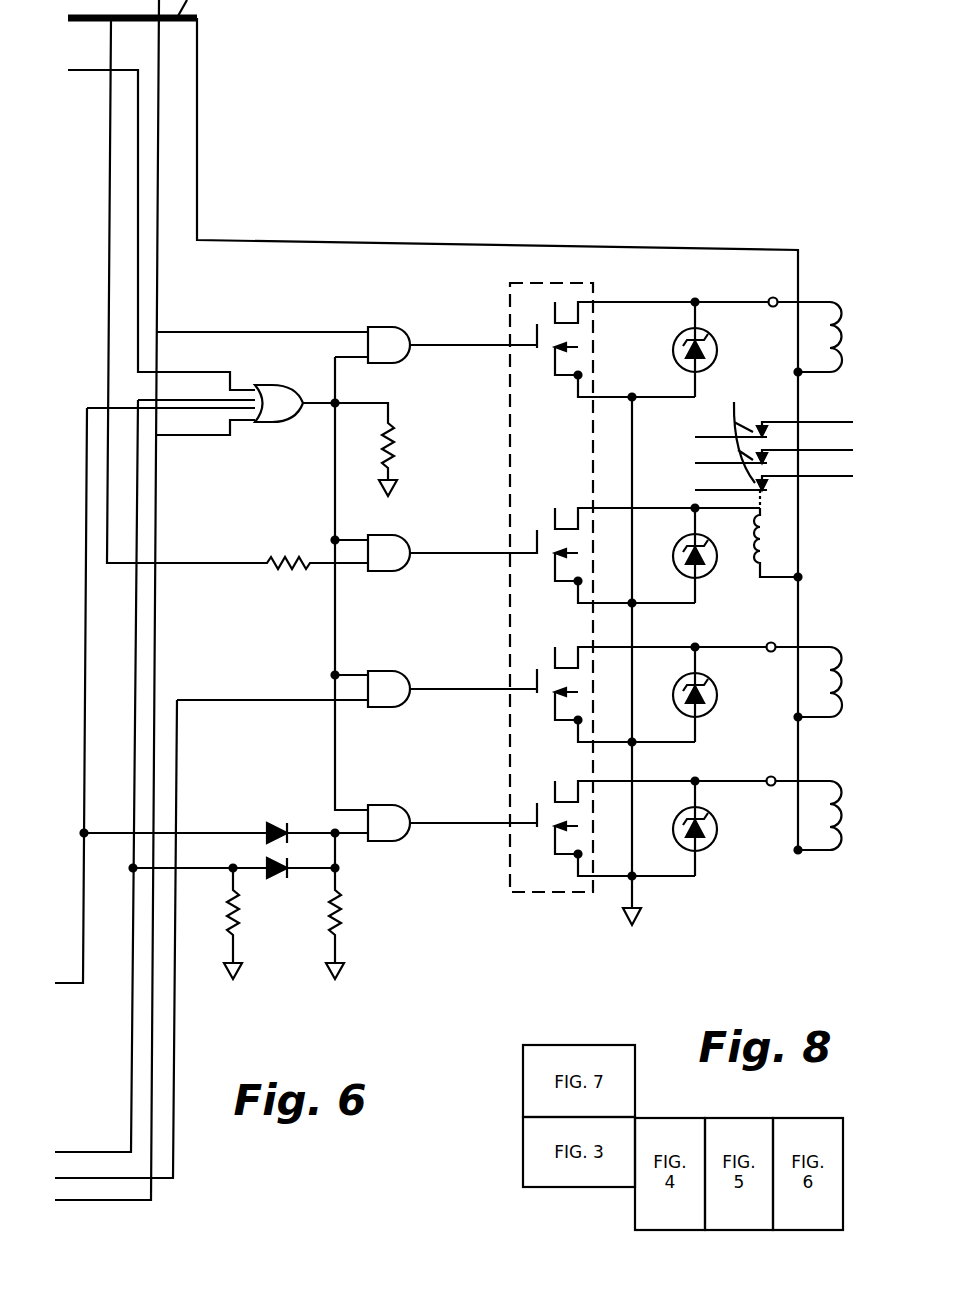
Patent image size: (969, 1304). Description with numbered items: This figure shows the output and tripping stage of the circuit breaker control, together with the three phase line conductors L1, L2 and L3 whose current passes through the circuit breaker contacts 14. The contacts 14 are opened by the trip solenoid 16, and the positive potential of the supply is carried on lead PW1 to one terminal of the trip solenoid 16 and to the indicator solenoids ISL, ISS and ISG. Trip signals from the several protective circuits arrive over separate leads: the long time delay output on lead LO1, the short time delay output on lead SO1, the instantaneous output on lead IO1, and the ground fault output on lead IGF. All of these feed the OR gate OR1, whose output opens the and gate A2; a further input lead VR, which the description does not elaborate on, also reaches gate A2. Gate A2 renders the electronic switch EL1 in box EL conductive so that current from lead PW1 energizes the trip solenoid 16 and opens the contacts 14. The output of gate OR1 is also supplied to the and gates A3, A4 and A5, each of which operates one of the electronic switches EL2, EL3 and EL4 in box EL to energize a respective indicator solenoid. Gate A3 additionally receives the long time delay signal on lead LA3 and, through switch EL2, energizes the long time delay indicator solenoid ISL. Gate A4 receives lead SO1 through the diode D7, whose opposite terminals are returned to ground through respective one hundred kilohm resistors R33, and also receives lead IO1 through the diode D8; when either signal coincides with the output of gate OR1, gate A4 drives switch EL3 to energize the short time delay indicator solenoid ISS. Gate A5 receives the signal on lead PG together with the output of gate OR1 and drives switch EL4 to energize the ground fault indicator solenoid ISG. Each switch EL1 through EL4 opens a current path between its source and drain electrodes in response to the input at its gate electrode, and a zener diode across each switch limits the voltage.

The lead PW1 is at (428, 243).
The lead IGF is at (141, 92).
The lead SO1 is at (131, 1047).
The lead LO1 is at (201, 436).
The lead LA3 is at (277, 700).
The lead IO1 is at (257, 833).
The lead PG is at (312, 332).
The signal line VR is at (242, 563).
The OR gate OR1 is at (326, 440).
The and gate A5 is at (436, 345).
The and gate A2 is at (436, 553).
The and gate A3 is at (436, 689).
The and gate A4 is at (452, 823).
The diode D8 is at (283, 827).
The diode D7 is at (276, 878).
The resistors R33 is at (331, 912).
The box EL is at (510, 296).
The electronic switch EL4 is at (543, 356).
The electronic switch EL1 is at (543, 560).
The electronic switch EL2 is at (543, 700).
The electronic switch EL3 is at (541, 836).
The ground fault indicator solenoid ISG is at (843, 340).
The long time delay indicator solenoid ISL is at (843, 683).
The short time delay indicator solenoid ISS is at (843, 818).
The circuit breaker contacts 14 is at (790, 434).
The line conductor L3 is at (702, 437).
The line conductor L2 is at (702, 463).
The line conductor L1 is at (702, 490).
The trip solenoid 16 is at (766, 535).